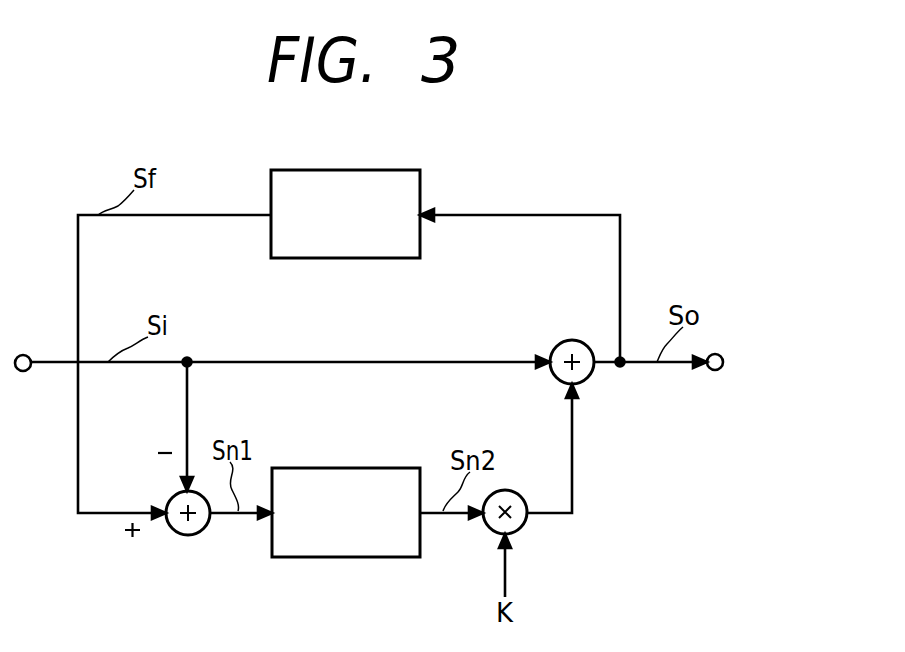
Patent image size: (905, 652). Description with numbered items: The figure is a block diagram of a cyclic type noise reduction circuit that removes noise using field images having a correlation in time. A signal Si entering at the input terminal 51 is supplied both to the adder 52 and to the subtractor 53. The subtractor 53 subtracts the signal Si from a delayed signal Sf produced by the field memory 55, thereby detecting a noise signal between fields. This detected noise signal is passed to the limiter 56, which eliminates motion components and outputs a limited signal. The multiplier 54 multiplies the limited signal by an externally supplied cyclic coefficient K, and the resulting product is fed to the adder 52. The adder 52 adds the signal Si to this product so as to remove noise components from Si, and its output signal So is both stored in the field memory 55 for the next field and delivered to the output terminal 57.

The input terminal 51 is at (22, 354).
The adder 52 is at (565, 340).
The subtractor 53 is at (204, 531).
The multiplier 54 is at (522, 526).
The field memory 55 is at (400, 170).
The limiter 56 is at (367, 468).
The output terminal 57 is at (713, 371).